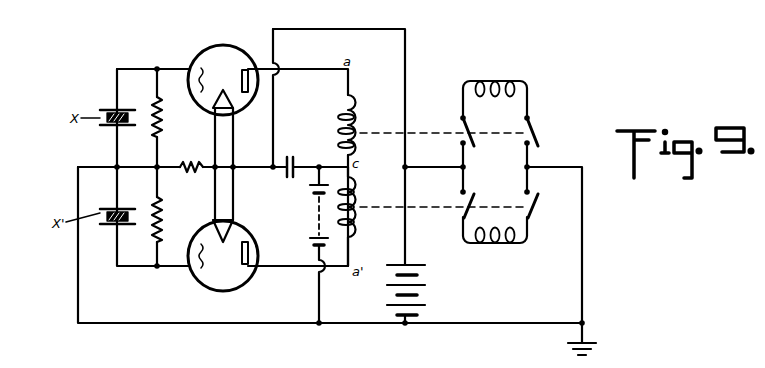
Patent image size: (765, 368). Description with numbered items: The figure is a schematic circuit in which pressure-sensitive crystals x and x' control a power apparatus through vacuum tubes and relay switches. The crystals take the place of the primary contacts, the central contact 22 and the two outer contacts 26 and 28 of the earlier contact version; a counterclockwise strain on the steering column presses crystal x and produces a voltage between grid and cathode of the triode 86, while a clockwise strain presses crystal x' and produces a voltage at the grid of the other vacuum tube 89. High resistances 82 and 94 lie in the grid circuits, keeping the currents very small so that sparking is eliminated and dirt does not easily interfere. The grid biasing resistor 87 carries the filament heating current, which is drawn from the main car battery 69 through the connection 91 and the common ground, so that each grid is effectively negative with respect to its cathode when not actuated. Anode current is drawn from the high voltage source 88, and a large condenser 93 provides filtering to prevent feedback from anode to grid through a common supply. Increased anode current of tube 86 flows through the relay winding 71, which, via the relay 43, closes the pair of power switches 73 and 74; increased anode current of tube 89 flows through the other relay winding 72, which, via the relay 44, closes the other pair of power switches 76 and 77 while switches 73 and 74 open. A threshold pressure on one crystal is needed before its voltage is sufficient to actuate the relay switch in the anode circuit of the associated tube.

The central contact 22 is at (129, 159).
The outer contact 26 is at (112, 226).
The outer contact 28 is at (113, 108).
The relay 43 is at (495, 91).
The relay 44 is at (495, 244).
The main car battery 69 is at (417, 286).
The relay winding 71 is at (357, 125).
The relay winding 72 is at (357, 216).
The power switch 73 is at (457, 132).
The power switch 74 is at (539, 132).
The power switch 76 is at (459, 209).
The power switch 77 is at (540, 209).
The high resistance 82 is at (167, 117).
The triode 86 is at (236, 44).
The grid biasing resistor 87 is at (191, 159).
The high voltage source 88 is at (315, 245).
The vacuum tube 89 is at (223, 265).
The connection 91 is at (339, 139).
The condenser 93 is at (290, 160).
The high resistance 94 is at (167, 219).